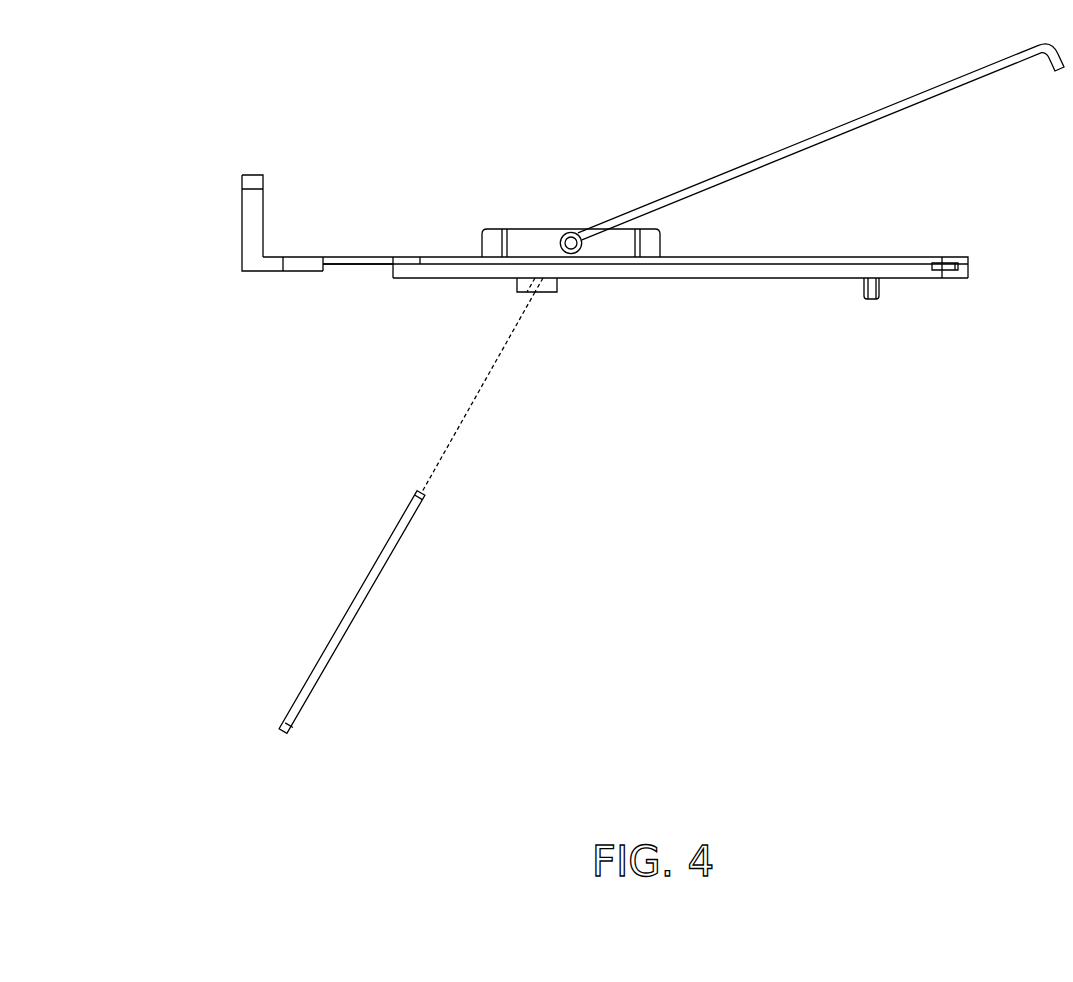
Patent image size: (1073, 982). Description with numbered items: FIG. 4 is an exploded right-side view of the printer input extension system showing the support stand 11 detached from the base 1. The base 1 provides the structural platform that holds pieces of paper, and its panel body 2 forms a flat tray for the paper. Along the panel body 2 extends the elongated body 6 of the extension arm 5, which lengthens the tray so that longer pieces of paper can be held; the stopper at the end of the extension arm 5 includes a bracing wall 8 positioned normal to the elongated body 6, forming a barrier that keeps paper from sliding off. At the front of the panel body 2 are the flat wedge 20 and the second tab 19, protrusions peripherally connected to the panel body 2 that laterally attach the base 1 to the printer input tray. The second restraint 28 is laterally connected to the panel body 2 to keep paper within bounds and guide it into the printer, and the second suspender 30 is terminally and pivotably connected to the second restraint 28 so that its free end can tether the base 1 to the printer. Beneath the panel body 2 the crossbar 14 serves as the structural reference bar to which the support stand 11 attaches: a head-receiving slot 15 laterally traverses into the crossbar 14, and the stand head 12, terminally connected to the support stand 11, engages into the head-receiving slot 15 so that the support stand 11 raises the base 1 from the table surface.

The base 1 is at (695, 355).
The panel body 2 is at (601, 278).
The extension arm 5 is at (357, 165).
The elongated body 6 is at (357, 265).
The bracing wall 8 is at (250, 213).
The support stand 11 is at (376, 570).
The stand head 12 is at (430, 487).
The crossbar 14 is at (516, 283).
The head-receiving slot 15 is at (541, 293).
The second tab 19 is at (948, 272).
The flat wedge 20 is at (965, 272).
The second restraint 28 is at (658, 245).
The second suspender 30 is at (810, 143).